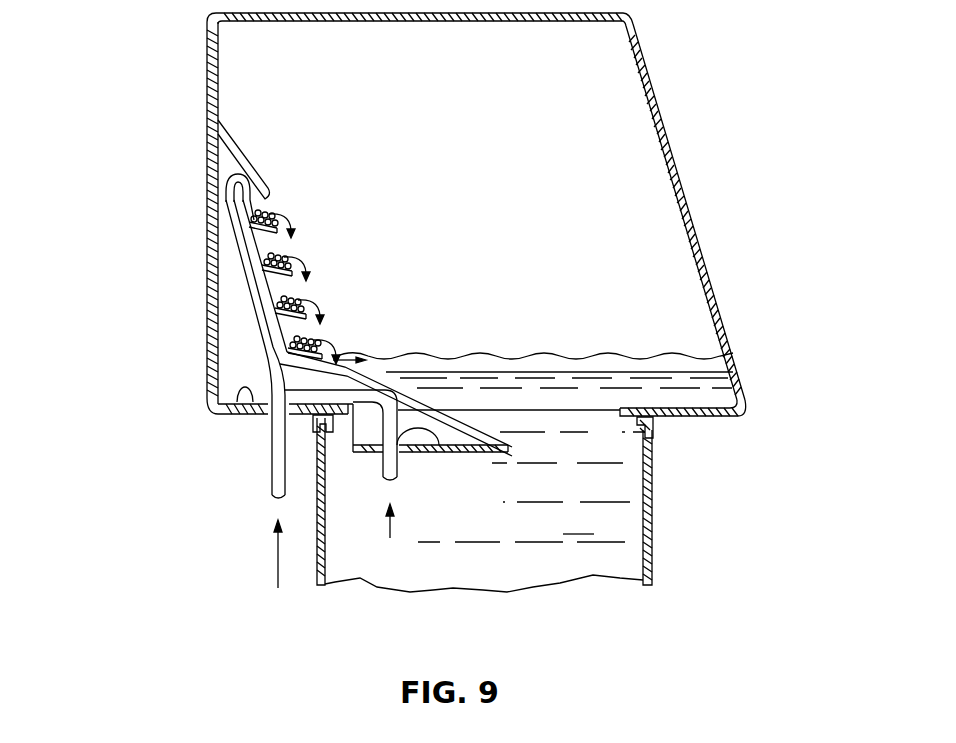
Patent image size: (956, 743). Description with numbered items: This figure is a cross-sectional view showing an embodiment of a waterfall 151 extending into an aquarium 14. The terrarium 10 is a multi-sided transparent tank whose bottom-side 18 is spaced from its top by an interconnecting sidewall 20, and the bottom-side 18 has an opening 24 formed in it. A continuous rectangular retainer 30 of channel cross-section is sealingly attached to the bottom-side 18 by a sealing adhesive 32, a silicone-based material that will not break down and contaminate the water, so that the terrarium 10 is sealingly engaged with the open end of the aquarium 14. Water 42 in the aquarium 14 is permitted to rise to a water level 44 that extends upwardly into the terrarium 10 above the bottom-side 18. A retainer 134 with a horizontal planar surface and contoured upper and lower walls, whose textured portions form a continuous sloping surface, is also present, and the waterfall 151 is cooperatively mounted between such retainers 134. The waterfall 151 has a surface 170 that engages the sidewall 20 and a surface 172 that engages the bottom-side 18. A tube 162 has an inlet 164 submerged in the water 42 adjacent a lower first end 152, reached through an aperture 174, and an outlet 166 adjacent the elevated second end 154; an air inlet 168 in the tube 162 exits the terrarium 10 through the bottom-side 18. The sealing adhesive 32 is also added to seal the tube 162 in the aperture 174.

The terrarium 10 is at (686, 171).
The aquarium 14 is at (662, 517).
The bottom-side 18 is at (212, 408).
The sidewall 20 is at (205, 93).
The opening 24 is at (521, 436).
The retainer 30 is at (655, 421).
The sealing adhesive 32 is at (341, 422).
The water 42 is at (524, 522).
The water level 44 is at (428, 371).
The retainer 134 is at (601, 347).
The waterfall 151 is at (343, 240).
The first end 152 is at (447, 413).
The second end 154 is at (240, 137).
The tube 162 is at (243, 299).
The inlet 164 is at (398, 483).
The outlet 166 is at (262, 199).
The air inlet 168 is at (275, 500).
The surface 170 is at (165, 197).
The surface 172 is at (243, 410).
The aperture 174 is at (383, 440).